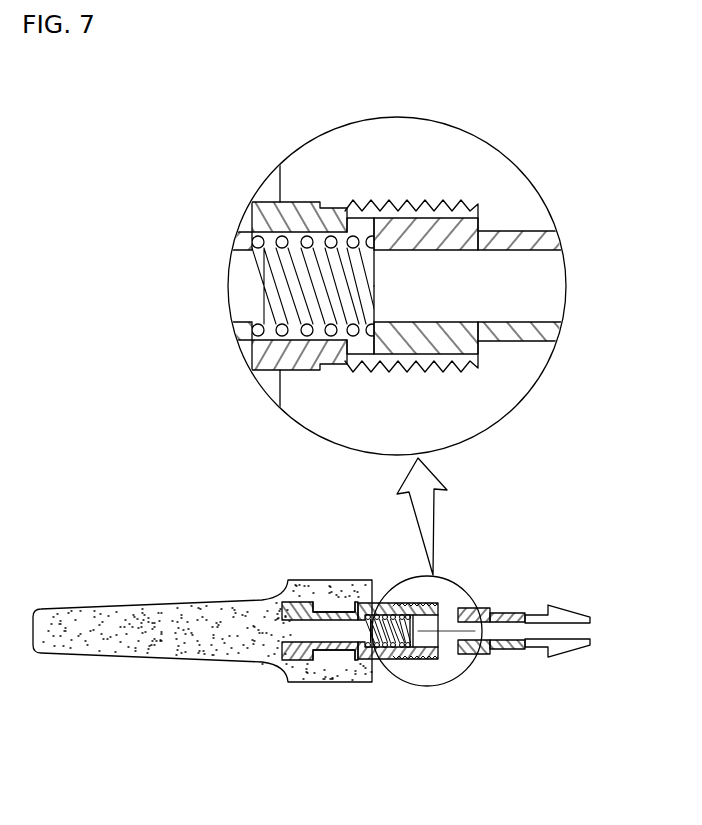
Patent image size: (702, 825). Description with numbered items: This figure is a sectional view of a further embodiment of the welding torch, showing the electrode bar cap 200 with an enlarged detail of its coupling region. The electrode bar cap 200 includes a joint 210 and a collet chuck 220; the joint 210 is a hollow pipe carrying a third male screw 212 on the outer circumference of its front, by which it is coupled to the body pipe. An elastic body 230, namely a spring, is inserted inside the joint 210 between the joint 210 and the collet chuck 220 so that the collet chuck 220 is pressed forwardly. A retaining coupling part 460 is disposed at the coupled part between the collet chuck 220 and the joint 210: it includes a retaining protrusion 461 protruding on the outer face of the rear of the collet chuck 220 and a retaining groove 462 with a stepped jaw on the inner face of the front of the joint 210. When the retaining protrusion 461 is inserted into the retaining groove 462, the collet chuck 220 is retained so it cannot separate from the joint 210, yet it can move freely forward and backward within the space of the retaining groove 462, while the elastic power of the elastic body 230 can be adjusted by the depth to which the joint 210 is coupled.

The electrode bar cap 200 is at (347, 702).
The joint 210 is at (310, 210).
The third male screw 212 is at (370, 603).
The collet chuck 220 is at (513, 654).
The elastic body 230 is at (253, 282).
The retaining coupling part 460 is at (444, 360).
The retaining protrusion 461 is at (456, 214).
The retaining groove 462 is at (418, 226).